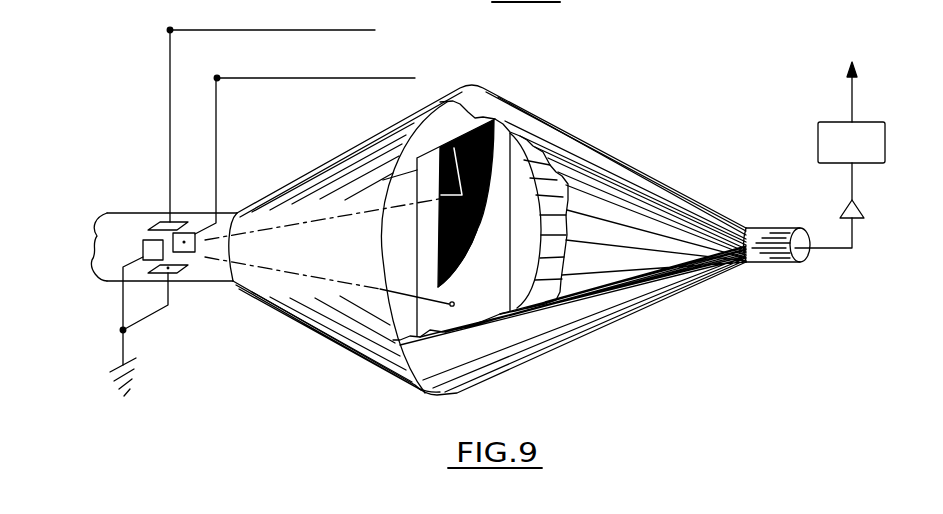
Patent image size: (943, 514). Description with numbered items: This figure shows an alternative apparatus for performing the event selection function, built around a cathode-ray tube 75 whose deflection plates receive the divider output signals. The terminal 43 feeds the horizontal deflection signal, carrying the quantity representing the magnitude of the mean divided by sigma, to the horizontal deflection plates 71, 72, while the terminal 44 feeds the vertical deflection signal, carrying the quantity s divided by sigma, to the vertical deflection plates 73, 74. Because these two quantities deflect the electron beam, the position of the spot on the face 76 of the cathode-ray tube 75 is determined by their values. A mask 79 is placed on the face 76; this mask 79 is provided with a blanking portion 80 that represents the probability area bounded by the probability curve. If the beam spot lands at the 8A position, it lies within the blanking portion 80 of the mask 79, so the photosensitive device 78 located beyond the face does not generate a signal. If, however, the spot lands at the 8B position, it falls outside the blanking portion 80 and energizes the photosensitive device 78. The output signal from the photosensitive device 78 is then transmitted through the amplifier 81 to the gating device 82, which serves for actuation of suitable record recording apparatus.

The terminal 44 is at (170, 30).
The terminal 43 is at (217, 78).
The horizontal deflection plate 71 is at (193, 232).
The horizontal deflection plate 72 is at (153, 252).
The vertical deflection plate 73 is at (157, 223).
The vertical deflection plate 74 is at (182, 272).
The cathode-ray tube 75 is at (310, 326).
The face of the cathode-ray tube 76 is at (520, 277).
The photosensitive device 78 is at (771, 270).
The mask 79 is at (420, 223).
The blanking portion 80 is at (465, 258).
The spot position 8A is at (454, 148).
The spot position 8B is at (455, 302).
The amplifier 81 is at (846, 210).
The gating device 82 is at (818, 140).